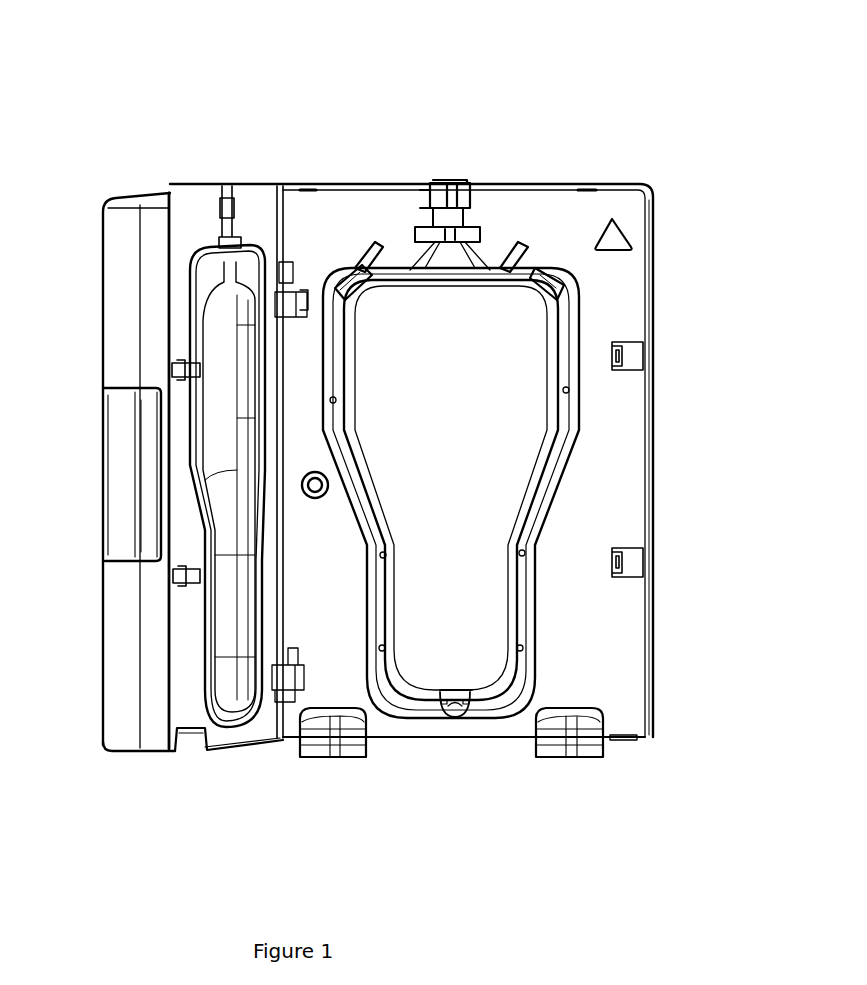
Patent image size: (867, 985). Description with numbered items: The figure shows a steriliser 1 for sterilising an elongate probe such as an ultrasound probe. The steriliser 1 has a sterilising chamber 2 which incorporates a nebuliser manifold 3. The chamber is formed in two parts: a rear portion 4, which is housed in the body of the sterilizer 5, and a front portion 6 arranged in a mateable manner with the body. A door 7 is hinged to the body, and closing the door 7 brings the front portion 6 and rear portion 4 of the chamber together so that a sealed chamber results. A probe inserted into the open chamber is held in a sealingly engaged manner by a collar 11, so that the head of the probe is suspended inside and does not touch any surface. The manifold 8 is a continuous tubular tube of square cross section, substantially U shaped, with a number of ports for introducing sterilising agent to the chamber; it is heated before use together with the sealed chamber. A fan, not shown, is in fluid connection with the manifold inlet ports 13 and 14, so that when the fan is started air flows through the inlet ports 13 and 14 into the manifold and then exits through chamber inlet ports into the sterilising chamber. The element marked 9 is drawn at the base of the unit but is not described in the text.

The steriliser 1 is at (511, 213).
The sterilising chamber 2 is at (502, 343).
The nebuliser manifold 3 is at (577, 428).
The rear portion 4 is at (460, 627).
The body of the sterilizer 5 is at (625, 662).
The front portion 6 is at (220, 400).
The door 7 is at (133, 692).
The manifold 8 is at (540, 548).
The base plate 9 is at (267, 738).
The collar 11 is at (447, 185).
The manifold inlet port 13 is at (357, 265).
The manifold inlet port 14 is at (548, 262).